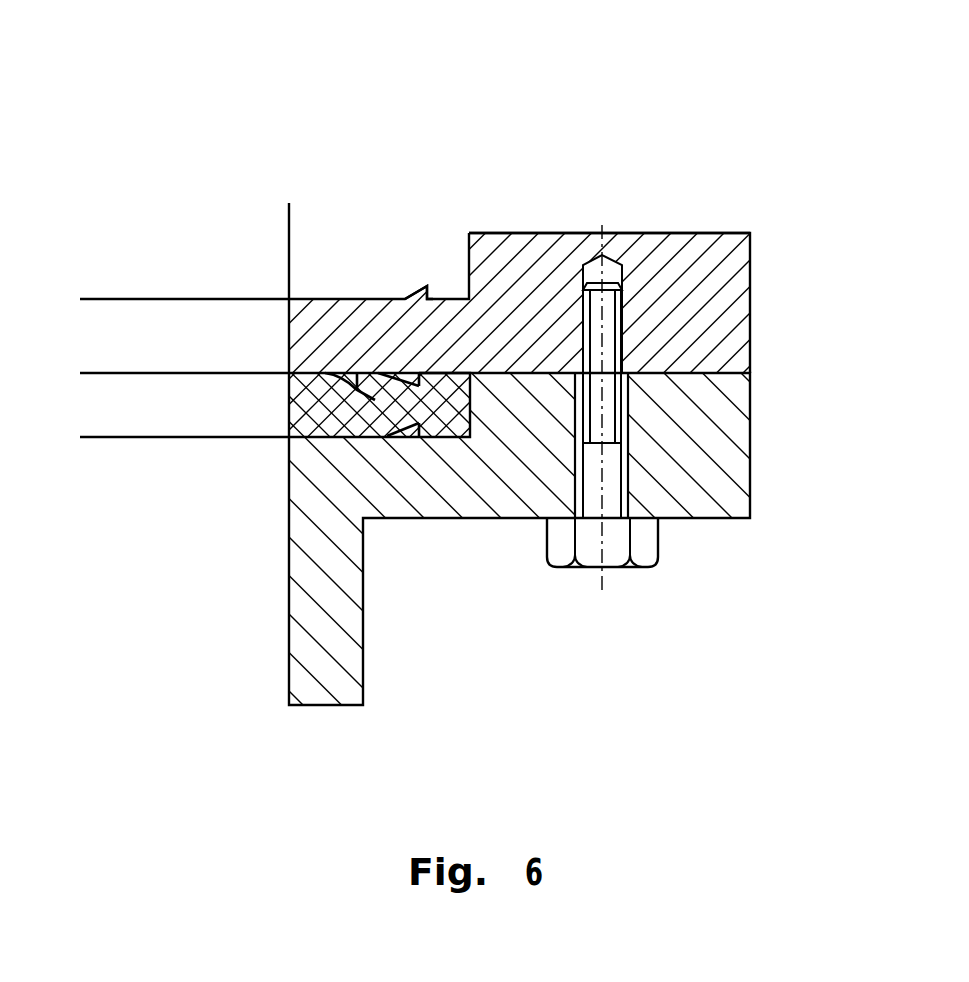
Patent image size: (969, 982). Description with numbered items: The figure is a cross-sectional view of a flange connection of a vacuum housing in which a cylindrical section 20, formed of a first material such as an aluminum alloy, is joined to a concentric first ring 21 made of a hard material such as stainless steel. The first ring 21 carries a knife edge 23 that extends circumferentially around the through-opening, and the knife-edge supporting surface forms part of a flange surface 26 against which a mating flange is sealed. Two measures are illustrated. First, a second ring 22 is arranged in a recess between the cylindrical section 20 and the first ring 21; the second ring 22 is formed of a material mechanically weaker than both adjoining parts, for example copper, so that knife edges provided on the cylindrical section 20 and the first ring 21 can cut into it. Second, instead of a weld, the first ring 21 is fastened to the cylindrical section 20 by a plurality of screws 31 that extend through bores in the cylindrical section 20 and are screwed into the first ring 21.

The cylindrical section 20 is at (325, 630).
The first ring 21 is at (724, 322).
The second ring 22 is at (375, 394).
The knife edge 23 is at (425, 284).
The flange surface 26 is at (688, 230).
The screws 31 is at (641, 543).